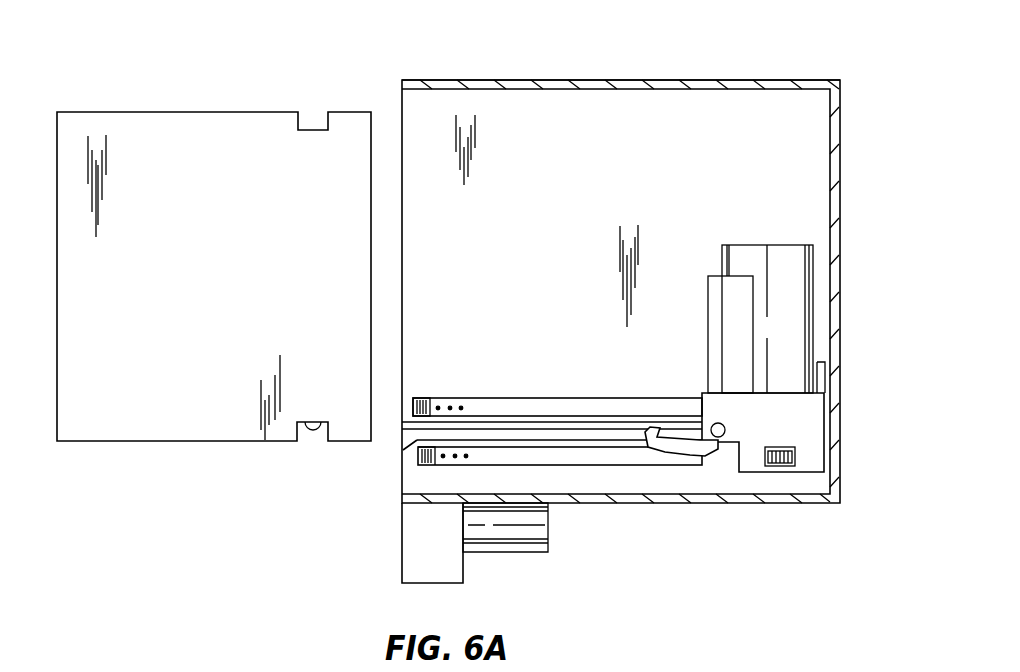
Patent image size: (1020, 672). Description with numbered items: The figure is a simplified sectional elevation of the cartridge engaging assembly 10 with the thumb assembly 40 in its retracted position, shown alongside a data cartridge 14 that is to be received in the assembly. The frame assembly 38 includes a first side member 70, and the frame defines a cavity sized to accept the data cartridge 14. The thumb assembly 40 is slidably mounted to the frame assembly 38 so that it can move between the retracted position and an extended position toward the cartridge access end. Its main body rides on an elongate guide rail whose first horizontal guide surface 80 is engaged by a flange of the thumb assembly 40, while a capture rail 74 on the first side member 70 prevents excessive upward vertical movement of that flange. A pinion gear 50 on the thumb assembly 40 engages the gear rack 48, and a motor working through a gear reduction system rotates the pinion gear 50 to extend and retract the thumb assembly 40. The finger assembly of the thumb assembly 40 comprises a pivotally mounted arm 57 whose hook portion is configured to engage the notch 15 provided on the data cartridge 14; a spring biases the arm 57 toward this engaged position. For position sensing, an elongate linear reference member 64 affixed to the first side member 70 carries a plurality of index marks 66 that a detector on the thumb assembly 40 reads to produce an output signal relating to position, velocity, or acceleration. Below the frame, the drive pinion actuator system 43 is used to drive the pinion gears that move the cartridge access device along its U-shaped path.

The cartridge engaging assembly 10 is at (378, 47).
The data cartridge 14 is at (206, 100).
The notch 15 is at (316, 426).
The frame assembly 38 is at (855, 131).
The thumb assembly 40 is at (758, 232).
The drive pinion actuator system 43 is at (507, 566).
The gear rack 48 is at (428, 468).
The pinion gear 50 is at (795, 456).
The arm 57 is at (680, 456).
The elongate linear reference member 64 is at (490, 397).
The index marks 66 is at (433, 398).
The first side member 70 is at (678, 80).
The capture rail 74 is at (575, 422).
The first horizontal guide surface 80 is at (530, 441).